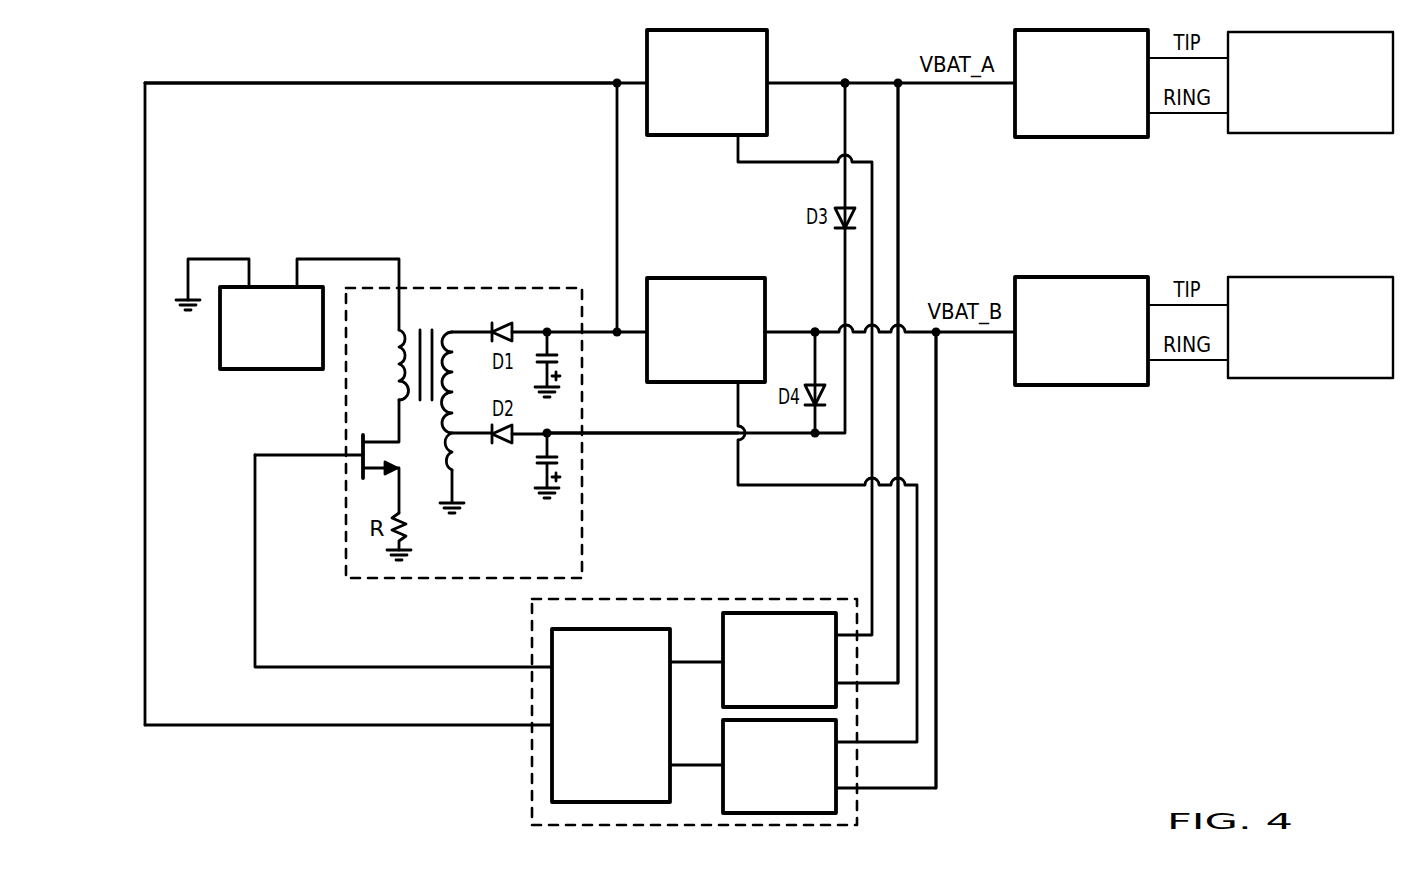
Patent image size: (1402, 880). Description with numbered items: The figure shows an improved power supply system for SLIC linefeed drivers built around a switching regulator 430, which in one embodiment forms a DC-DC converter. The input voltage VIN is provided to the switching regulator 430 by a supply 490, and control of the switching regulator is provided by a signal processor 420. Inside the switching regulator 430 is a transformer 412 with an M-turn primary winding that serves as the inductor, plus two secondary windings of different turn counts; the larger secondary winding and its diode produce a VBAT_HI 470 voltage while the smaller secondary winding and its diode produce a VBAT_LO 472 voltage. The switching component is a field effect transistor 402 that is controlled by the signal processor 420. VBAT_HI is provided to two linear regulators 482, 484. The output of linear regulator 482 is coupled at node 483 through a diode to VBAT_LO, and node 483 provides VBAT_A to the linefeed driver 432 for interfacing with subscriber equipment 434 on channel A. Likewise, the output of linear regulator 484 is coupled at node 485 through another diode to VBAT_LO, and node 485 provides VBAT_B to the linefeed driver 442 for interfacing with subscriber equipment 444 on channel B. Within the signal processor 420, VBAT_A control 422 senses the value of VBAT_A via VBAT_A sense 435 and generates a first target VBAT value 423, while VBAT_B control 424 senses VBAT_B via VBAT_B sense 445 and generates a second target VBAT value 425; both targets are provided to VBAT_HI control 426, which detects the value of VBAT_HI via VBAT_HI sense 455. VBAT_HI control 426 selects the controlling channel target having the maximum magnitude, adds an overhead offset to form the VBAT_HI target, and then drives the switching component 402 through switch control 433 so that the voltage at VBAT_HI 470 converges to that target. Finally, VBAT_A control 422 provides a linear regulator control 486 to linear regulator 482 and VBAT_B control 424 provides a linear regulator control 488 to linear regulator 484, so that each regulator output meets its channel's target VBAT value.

The field effect transistor 402 is at (362, 436).
The transformer 412 is at (430, 326).
The signal processor 420 is at (668, 592).
The VBAT_A control 422 is at (779, 660).
The first target VBAT value 423 is at (708, 665).
The VBAT_B control 424 is at (779, 766).
The second target VBAT value 425 is at (695, 764).
The VBAT_HI control 426 is at (611, 715).
The switching regulator 430 is at (494, 287).
The linefeed driver 432 is at (1081, 83).
The switch control 433 is at (403, 561).
The subscriber equipment 434 is at (1310, 82).
The VBAT_A sense 435 is at (905, 190).
The linefeed driver 442 is at (1081, 331).
The subscriber equipment 444 is at (1310, 327).
The VBAT_B sense 445 is at (945, 466).
The VBAT_HI sense 455 is at (348, 711).
The VBAT_HI 470 is at (612, 138).
The VBAT_LO 472 is at (664, 438).
The linear regulator 482 is at (707, 82).
The node 483 is at (843, 72).
The linear regulator 484 is at (706, 330).
The node 485 is at (814, 322).
The linear regulator control 486 is at (803, 166).
The linear regulator control 488 is at (822, 490).
The supply 490 is at (287, 297).